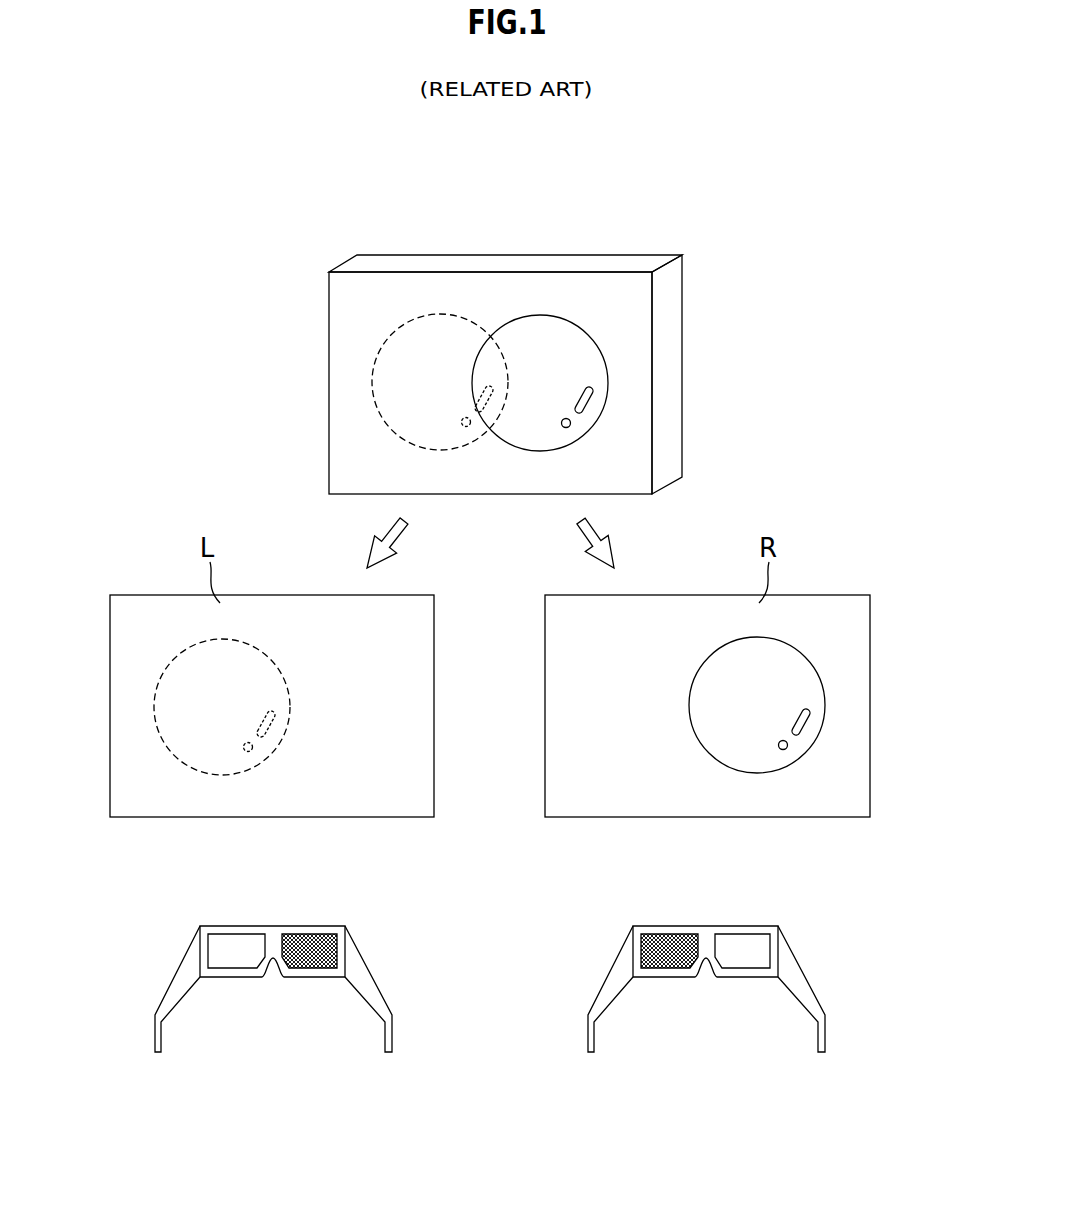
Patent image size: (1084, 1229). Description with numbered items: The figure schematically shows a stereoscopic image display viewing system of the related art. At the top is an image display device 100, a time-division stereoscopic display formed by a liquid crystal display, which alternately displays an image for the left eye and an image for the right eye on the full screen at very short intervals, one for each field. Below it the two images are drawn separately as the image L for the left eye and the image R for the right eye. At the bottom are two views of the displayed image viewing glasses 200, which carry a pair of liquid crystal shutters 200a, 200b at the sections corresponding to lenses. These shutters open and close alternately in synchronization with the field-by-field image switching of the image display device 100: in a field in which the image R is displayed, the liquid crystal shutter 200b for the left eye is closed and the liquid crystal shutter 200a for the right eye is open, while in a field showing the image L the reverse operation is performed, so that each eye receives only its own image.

The image display device 100 is at (673, 313).
The displayed image viewing glasses 200 is at (511, 955).
The liquid crystal shutter for the right eye 200a is at (316, 955).
The liquid crystal shutter for the left eye 200b is at (235, 955).